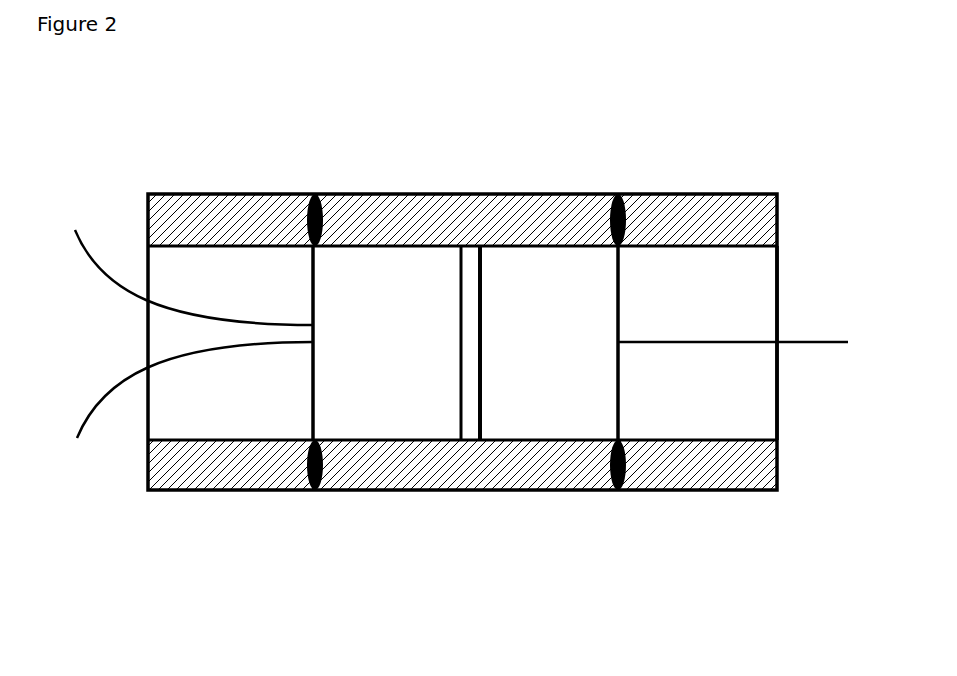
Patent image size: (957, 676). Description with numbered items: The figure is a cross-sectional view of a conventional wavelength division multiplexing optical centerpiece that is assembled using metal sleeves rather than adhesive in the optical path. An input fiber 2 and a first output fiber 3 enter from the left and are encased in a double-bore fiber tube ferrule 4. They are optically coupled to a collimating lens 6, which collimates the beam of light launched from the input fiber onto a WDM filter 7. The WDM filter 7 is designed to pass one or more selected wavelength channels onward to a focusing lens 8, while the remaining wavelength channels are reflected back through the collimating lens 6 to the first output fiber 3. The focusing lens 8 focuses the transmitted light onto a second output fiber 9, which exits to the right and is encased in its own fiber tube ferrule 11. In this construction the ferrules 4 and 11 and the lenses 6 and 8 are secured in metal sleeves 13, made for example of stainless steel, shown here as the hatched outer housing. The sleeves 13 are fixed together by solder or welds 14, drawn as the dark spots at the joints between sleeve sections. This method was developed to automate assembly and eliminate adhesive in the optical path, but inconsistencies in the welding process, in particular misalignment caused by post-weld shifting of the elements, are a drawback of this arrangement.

The input fiber 2 is at (95, 260).
The first output fiber 3 is at (93, 408).
The double-bore fiber tube ferrule 4 is at (205, 277).
The collimating lens 6 is at (378, 423).
The WDM filter 7 is at (470, 423).
The focusing lens 8 is at (505, 293).
The second output fiber 9 is at (810, 342).
The fiber tube ferrule 11 is at (737, 422).
The metal sleeves 13 is at (418, 194).
The solder or welds 14 is at (313, 193).